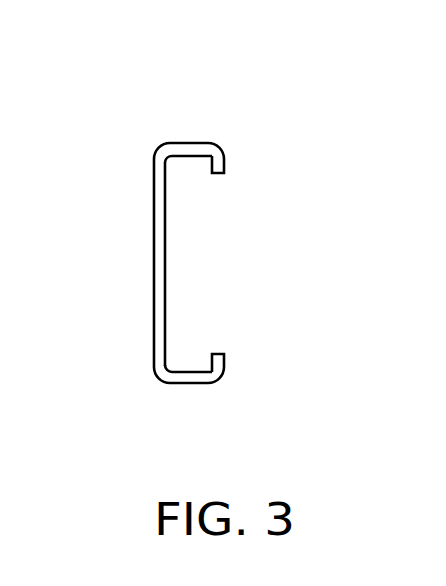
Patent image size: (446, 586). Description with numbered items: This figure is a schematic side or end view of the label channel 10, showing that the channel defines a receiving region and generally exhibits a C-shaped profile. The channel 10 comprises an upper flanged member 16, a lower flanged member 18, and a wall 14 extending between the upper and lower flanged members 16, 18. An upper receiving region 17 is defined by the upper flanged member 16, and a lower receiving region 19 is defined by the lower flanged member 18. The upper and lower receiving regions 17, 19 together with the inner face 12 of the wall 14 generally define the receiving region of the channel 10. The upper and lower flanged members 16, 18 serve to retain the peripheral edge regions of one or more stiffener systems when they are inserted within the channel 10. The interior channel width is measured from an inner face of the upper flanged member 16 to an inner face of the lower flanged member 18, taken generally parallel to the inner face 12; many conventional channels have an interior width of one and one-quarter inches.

The label channel 10 is at (156, 107).
The inner face 12 is at (165, 260).
The wall 14 is at (153, 230).
The upper flanged member 16 is at (218, 157).
The upper receiving region 17 is at (192, 170).
The lower flanged member 18 is at (217, 372).
The lower receiving region 19 is at (193, 357).